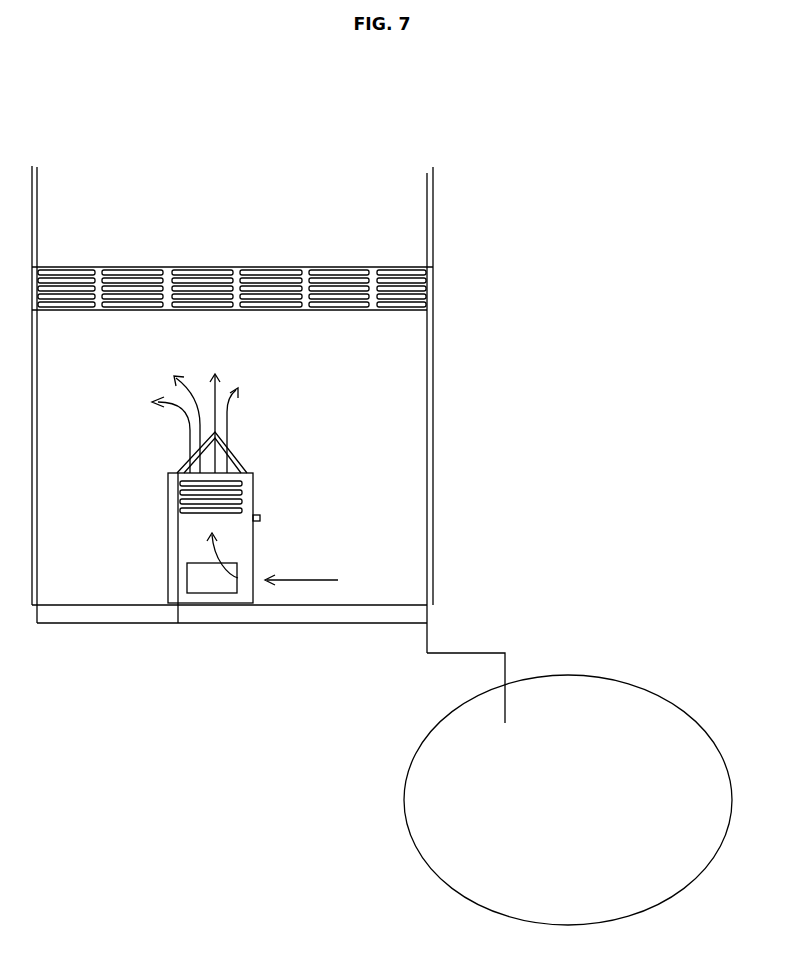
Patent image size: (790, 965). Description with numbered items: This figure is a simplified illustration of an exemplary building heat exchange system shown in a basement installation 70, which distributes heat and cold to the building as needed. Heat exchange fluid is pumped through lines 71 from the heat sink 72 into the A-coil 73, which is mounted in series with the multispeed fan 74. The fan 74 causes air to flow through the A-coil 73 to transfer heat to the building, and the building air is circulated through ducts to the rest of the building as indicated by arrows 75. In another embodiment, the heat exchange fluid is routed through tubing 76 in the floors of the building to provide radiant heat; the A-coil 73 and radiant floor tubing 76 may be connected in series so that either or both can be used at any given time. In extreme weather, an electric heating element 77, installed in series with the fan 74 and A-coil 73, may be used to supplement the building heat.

The basement installation 70 is at (234, 228).
The lines 71 is at (450, 653).
The heat sink 72 is at (568, 800).
The A-coil 73 is at (205, 443).
The multispeed fan 74 is at (187, 578).
The arrows 75 is at (222, 413).
The tubing 76 is at (310, 309).
The electric heating element 77 is at (178, 493).